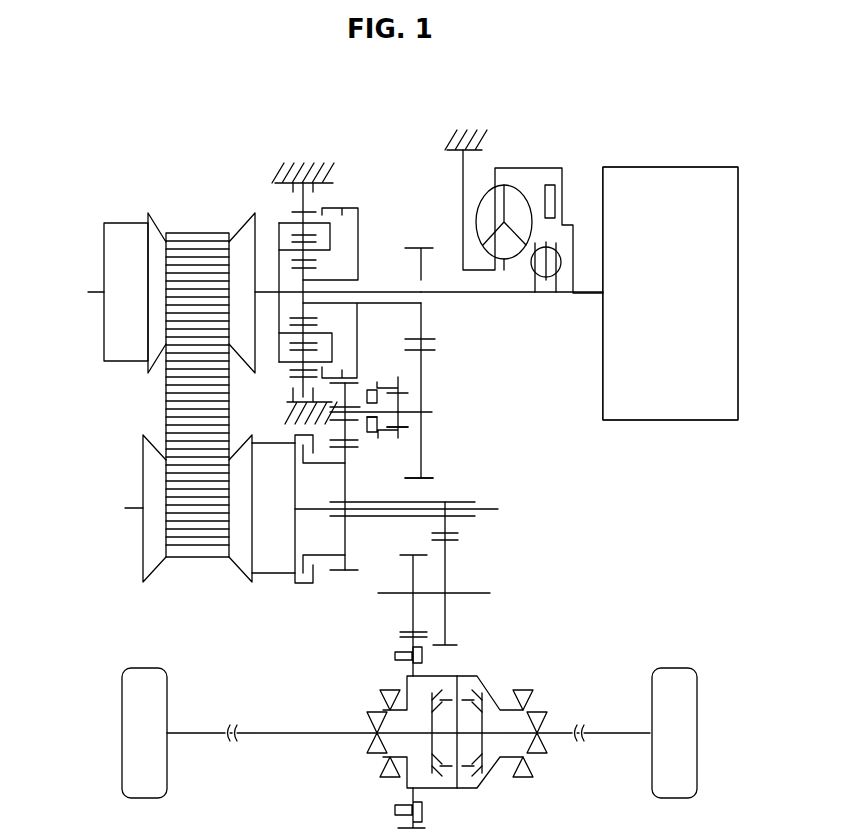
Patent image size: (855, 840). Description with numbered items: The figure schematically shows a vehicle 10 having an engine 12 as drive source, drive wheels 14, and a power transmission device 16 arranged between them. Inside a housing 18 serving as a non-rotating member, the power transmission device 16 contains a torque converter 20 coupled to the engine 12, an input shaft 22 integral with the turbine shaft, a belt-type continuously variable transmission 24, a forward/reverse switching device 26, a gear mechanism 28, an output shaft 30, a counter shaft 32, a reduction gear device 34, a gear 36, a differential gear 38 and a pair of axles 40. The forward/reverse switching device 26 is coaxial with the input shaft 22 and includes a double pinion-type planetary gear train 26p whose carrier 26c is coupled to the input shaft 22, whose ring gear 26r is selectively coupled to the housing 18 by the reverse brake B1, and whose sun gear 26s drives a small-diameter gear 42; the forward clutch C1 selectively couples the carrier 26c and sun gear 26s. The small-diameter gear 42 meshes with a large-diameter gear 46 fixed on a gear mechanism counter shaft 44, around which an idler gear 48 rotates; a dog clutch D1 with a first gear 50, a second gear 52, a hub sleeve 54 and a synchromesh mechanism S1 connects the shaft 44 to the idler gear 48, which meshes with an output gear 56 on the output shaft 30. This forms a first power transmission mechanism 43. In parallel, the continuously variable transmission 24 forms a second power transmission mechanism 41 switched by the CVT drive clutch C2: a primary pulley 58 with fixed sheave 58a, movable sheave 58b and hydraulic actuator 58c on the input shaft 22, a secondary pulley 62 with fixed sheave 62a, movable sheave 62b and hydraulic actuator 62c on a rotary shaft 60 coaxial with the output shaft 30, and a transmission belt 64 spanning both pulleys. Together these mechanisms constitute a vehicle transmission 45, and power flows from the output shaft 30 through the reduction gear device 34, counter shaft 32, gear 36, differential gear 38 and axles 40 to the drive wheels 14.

The vehicle 10 is at (649, 87).
The engine 12 is at (648, 181).
The drive wheels 14 is at (145, 675).
The power transmission device 16 is at (533, 185).
The housing 18 is at (468, 127).
The torque converter 20 is at (512, 161).
The input shaft 22 is at (437, 290).
The belt-type continuously variable transmission 24 is at (168, 399).
The forward/reverse switching device 26 is at (325, 274).
The ring gear 26r is at (293, 212).
The carrier 26c is at (332, 246).
The sun gear 26s is at (317, 324).
The double pinion-type planetary gear train 26p is at (290, 387).
The gear mechanism 28 is at (434, 390).
The output shaft 30 is at (384, 518).
The counter shaft 32 is at (485, 593).
The reduction gear device 34 is at (473, 533).
The gear 36 is at (404, 555).
The differential gear 38 is at (473, 674).
The axles 40 is at (290, 731).
The second power transmission mechanism 41 is at (168, 370).
The small-diameter gear 42 is at (425, 245).
The first power transmission mechanism 43 is at (428, 442).
The gear mechanism counter shaft 44 is at (432, 412).
The vehicle transmission 45 is at (325, 244).
The large-diameter gear 46 is at (412, 478).
The idler gear 48 is at (332, 443).
The first gear 50 is at (405, 440).
The second gear 52 is at (350, 460).
The hub sleeve 54 is at (370, 440).
The output gear 56 is at (335, 572).
The primary pulley 58 is at (148, 287).
The fixed sheave 58a is at (241, 229).
The movable sheave 58b is at (155, 231).
The primary hydraulic actuator 58c is at (125, 353).
The rotary shaft 60 is at (125, 509).
The secondary pulley 62 is at (185, 540).
The fixed sheave 62a is at (152, 563).
The movable sheave 62b is at (242, 562).
The secondary hydraulic actuator 62c is at (273, 565).
The transmission belt 64 is at (198, 557).
The reverse brake B1 is at (291, 197).
The forward clutch C1 is at (330, 231).
The CVT drive clutch C2 is at (317, 523).
The dog clutch D1 is at (388, 378).
The synchromesh mechanism S1 is at (368, 383).